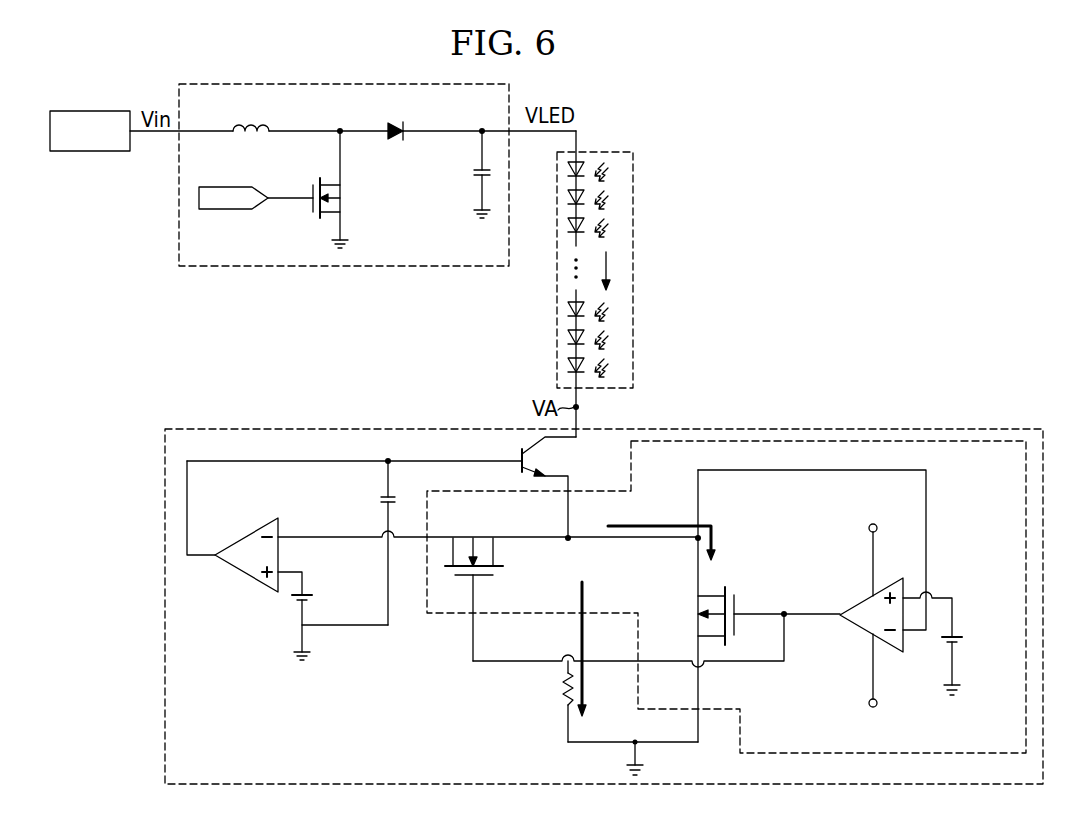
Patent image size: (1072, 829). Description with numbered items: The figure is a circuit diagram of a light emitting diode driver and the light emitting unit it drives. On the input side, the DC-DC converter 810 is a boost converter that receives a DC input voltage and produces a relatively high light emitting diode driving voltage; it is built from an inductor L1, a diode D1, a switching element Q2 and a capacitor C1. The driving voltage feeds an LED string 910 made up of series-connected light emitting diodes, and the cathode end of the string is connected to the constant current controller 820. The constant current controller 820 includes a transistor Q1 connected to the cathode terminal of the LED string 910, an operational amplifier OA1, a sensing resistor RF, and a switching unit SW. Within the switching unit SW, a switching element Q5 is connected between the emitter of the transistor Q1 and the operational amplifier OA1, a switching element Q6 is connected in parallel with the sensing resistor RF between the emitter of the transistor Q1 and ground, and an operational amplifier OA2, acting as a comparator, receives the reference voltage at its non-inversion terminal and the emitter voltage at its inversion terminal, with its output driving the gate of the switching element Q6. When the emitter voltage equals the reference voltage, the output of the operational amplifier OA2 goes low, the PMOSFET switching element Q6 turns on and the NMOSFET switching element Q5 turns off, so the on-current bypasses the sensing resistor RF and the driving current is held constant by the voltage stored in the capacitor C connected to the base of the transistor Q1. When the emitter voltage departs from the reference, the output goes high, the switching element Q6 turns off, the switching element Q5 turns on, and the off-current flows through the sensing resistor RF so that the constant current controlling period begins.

The DC-DC converter 810 is at (377, 200).
The LED string 910 is at (633, 172).
The constant current controller 820 is at (893, 429).
The switching unit SW is at (807, 441).
The inductor L1 is at (251, 112).
The diode D1 is at (395, 116).
The capacitor C1 is at (469, 174).
The switching element Q2 is at (287, 189).
The transistor Q1 is at (381, 487).
The operational amplifier OA1 is at (242, 571).
The capacitor C is at (380, 543).
The switching element Q5 is at (614, 587).
The switching element Q6 is at (751, 606).
The operational amplifier OA2 is at (858, 626).
The sensing resistor RF is at (553, 701).